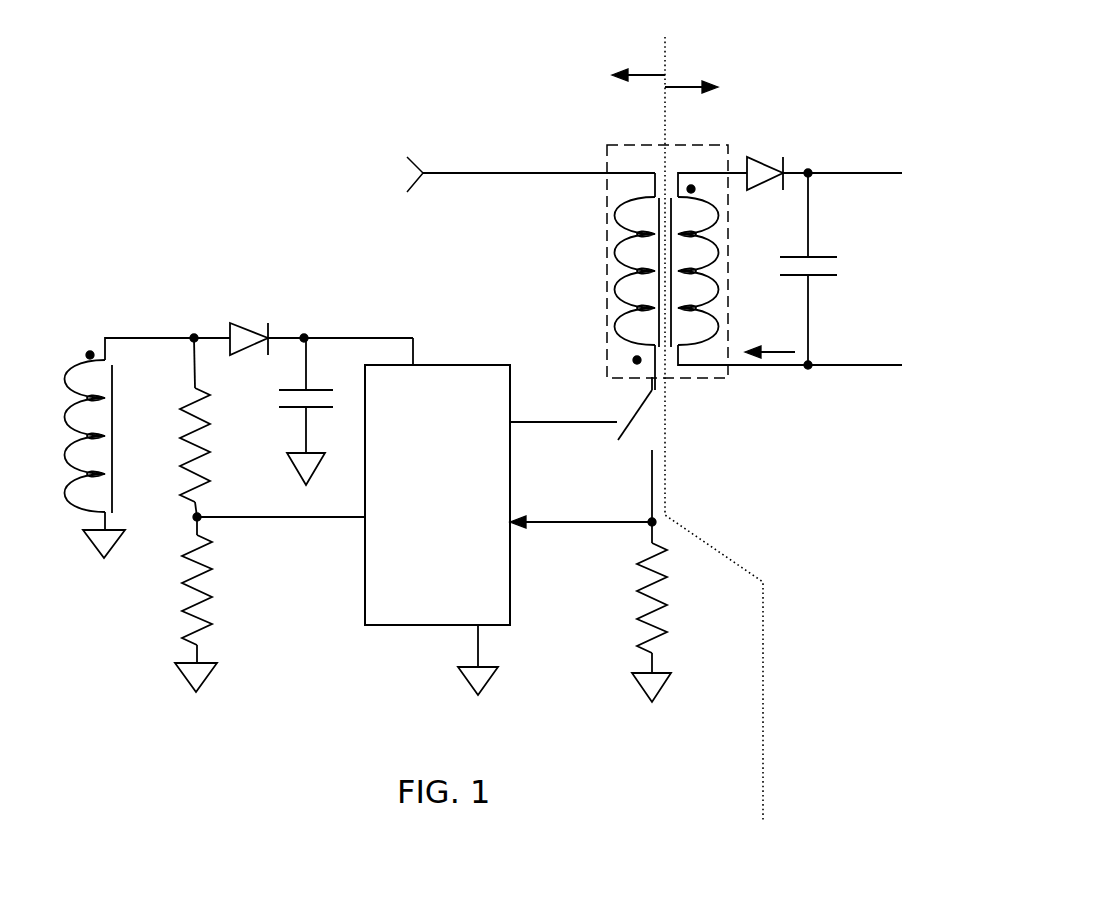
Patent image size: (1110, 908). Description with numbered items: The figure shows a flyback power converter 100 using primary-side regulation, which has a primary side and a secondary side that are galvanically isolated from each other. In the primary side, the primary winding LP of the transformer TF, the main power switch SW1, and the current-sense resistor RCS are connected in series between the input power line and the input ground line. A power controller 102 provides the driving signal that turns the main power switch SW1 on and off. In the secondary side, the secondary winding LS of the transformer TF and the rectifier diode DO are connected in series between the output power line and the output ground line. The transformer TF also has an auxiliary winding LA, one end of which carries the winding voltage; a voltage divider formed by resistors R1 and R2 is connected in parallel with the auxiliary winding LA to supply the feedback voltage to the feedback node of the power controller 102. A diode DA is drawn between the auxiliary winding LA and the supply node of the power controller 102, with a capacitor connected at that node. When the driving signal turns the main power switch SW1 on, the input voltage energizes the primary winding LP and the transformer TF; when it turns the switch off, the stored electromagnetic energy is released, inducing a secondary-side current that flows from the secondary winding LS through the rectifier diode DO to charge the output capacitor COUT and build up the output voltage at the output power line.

The flyback power converter 100 is at (212, 86).
The power controller 102 is at (430, 472).
The transformer TF is at (607, 273).
The primary winding LP is at (612, 333).
The secondary winding LS is at (716, 306).
The auxiliary winding LA is at (116, 434).
The auxiliary diode DA is at (249, 323).
The rectifier diode DO is at (767, 159).
The output capacitor COUT is at (830, 269).
The main power switch SW1 is at (662, 420).
The current-sense resistor RCS is at (664, 600).
The resistor R1 is at (212, 426).
The resistor R2 is at (183, 585).